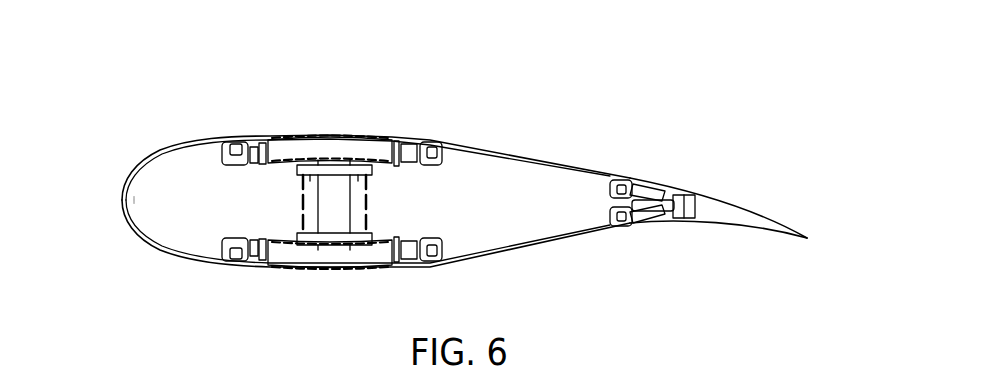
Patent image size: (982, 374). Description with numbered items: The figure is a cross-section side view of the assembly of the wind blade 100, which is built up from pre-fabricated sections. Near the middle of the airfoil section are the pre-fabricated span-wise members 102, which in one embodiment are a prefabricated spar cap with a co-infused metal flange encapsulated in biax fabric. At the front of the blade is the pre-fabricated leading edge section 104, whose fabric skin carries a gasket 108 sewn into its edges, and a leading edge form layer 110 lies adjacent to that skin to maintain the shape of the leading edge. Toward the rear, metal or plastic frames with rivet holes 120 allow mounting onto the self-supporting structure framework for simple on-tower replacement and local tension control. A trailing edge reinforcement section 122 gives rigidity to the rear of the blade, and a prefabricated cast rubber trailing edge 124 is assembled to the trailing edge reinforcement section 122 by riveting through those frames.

The wind blade 100 is at (222, 47).
The pre-fabricated span-wise member 102 is at (328, 142).
The pre-fabricated leading edge section 104 is at (113, 193).
The gasket 108 is at (431, 264).
The leading edge form layer 110 is at (135, 199).
The rivet holes 120 is at (674, 200).
The trailing edge reinforcement section 122 is at (661, 206).
The prefabricated cast rubber trailing edge 124 is at (750, 220).